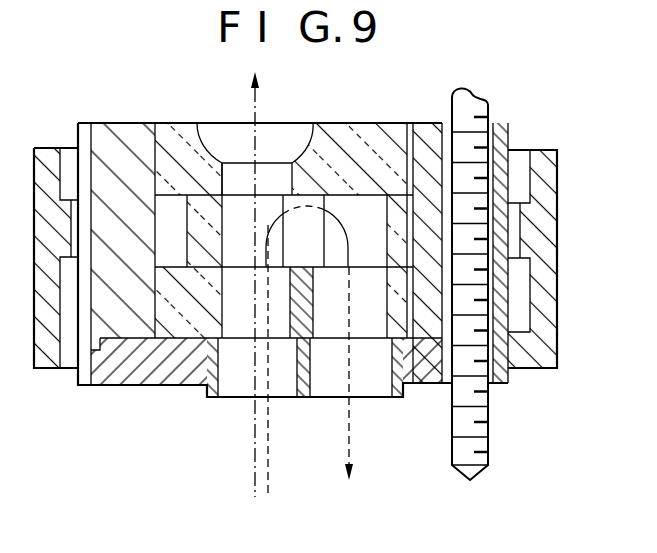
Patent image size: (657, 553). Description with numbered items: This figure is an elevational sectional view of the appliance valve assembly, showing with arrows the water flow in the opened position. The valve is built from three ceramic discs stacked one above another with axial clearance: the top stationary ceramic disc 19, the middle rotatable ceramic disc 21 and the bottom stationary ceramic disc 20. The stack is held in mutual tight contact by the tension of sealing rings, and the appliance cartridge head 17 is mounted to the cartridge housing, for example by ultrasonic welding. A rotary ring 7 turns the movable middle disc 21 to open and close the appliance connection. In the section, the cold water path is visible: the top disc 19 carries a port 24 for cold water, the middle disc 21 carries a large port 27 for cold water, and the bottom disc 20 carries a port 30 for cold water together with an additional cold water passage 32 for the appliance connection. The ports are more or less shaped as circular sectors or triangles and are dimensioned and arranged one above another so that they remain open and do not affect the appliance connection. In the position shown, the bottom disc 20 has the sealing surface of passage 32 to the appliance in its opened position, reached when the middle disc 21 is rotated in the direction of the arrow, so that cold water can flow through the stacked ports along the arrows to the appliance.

The rotary ring 7 is at (557, 290).
The appliance cartridge head 17 is at (128, 384).
The top stationary ceramic disc 19 is at (168, 137).
The bottom stationary ceramic disc 20 is at (197, 318).
The middle rotatable ceramic disc 21 is at (213, 226).
The port for cold water 24 is at (237, 172).
The large port for cold water 27 is at (268, 212).
The port for cold water 30 is at (278, 322).
The cold water passage 32 is at (368, 322).